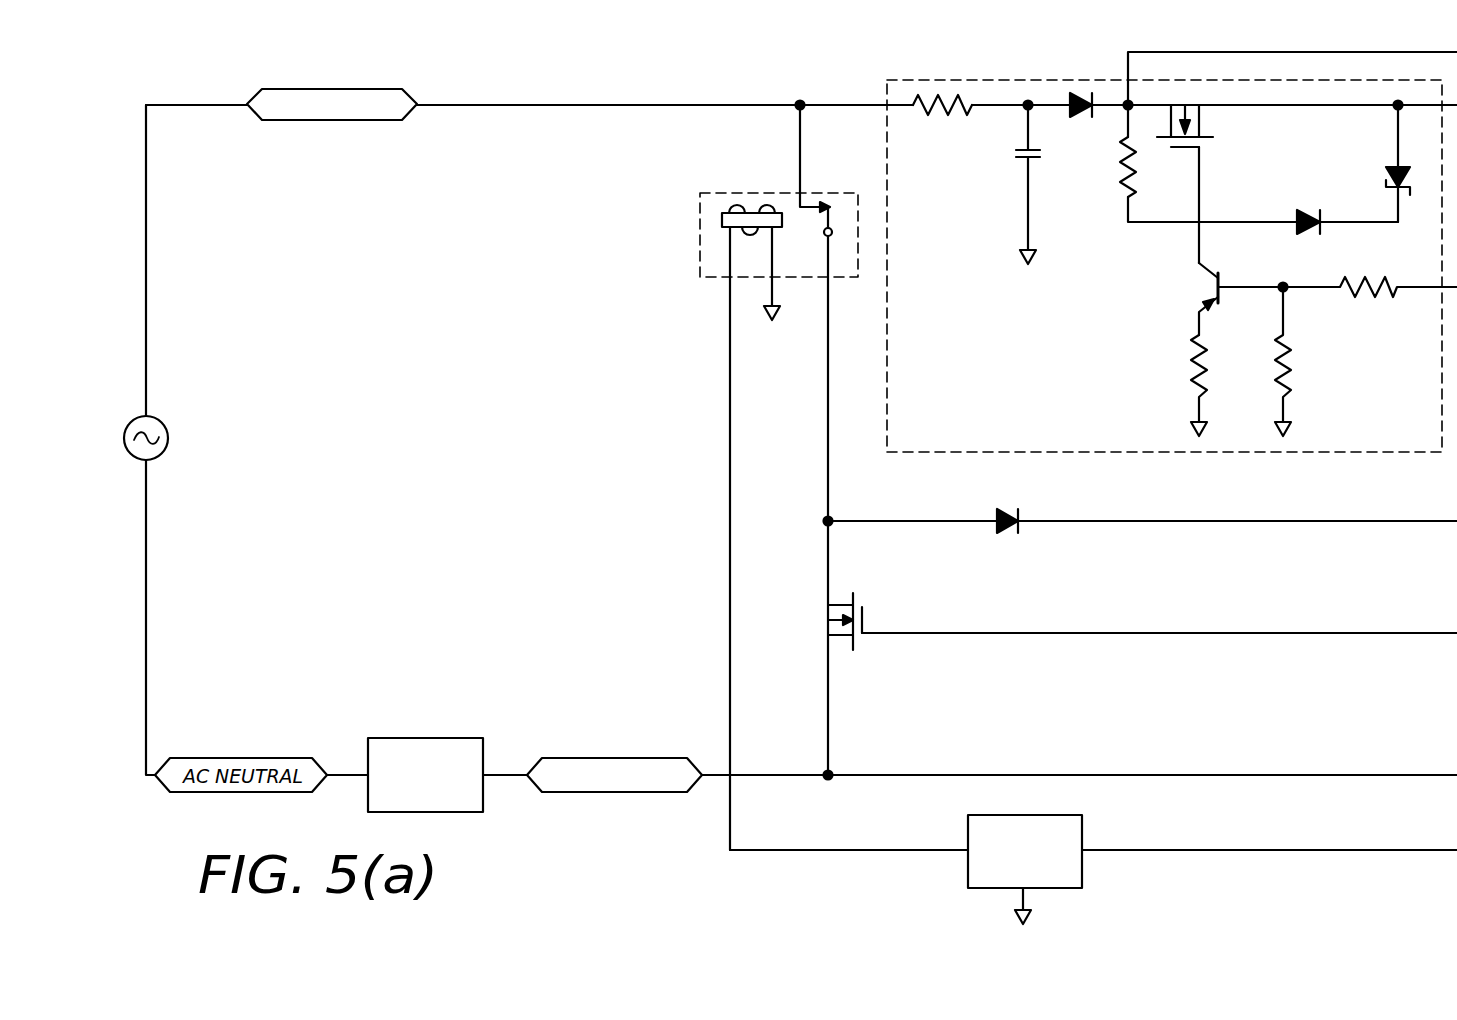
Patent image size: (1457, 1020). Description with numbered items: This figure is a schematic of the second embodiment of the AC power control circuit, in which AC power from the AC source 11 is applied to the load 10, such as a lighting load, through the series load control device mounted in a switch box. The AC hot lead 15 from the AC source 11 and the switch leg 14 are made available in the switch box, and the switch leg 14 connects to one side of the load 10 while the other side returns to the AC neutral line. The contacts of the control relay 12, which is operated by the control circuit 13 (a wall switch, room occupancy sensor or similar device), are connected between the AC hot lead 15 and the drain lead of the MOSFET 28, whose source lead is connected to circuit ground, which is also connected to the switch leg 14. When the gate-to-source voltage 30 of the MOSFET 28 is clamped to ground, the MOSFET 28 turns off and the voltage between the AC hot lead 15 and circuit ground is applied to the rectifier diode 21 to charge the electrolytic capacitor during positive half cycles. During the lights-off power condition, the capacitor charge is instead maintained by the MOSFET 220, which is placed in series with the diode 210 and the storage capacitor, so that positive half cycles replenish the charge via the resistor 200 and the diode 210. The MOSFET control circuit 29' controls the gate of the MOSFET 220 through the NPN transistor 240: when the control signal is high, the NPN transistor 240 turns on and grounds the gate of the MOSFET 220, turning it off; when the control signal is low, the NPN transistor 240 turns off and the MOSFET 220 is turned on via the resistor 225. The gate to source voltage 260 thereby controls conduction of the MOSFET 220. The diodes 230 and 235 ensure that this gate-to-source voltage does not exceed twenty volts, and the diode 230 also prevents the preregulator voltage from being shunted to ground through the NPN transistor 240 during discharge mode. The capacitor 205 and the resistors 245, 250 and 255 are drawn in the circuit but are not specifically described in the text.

The load 10 is at (425, 738).
The AC source 11 is at (167, 446).
The control relay 12 is at (700, 237).
The control circuit 13 is at (1050, 890).
The switch leg 14 is at (500, 774).
The AC hot lead 15 is at (545, 104).
The rectifier diode 21 is at (1010, 532).
The MOSFET 28 is at (827, 612).
The MOSFET control circuit 29' is at (1134, 250).
The gate-to-source voltage 30 is at (920, 645).
The resistor 200 is at (941, 113).
The capacitor 205 is at (1020, 160).
The diode 210 is at (1078, 115).
The MOSFET 220 is at (1178, 149).
The resistor 225 is at (1120, 175).
The diode 230 is at (1310, 210).
The diode 235 is at (1392, 167).
The NPN transistor 240 is at (1208, 271).
The resistor 245 is at (1194, 362).
The resistor 250 is at (1292, 356).
The resistor 255 is at (1360, 282).
The gate to source voltage 260 is at (1199, 207).